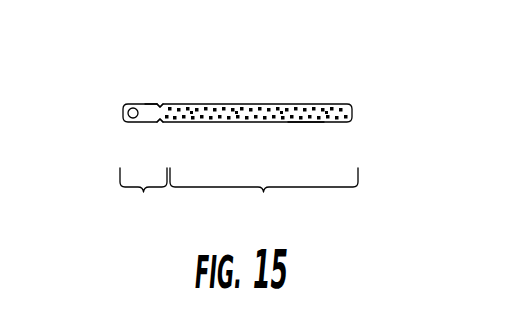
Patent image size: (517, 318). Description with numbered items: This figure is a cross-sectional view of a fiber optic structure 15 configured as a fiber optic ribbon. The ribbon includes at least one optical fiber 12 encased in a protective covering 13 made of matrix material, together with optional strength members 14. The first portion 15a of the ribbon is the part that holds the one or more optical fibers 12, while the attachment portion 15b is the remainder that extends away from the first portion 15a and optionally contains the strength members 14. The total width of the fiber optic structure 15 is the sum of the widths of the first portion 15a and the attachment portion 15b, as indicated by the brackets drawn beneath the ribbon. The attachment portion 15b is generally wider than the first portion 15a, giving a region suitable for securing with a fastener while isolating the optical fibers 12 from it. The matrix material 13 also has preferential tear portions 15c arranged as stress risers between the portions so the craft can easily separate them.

The optical fiber 12 is at (128, 124).
The protective covering 13 is at (150, 105).
The strength member 14 is at (290, 122).
The fiber optic structure 15 is at (313, 82).
The first portion 15a is at (143, 198).
The attachment portion 15b is at (264, 198).
The preferential tear portions 15c is at (158, 104).